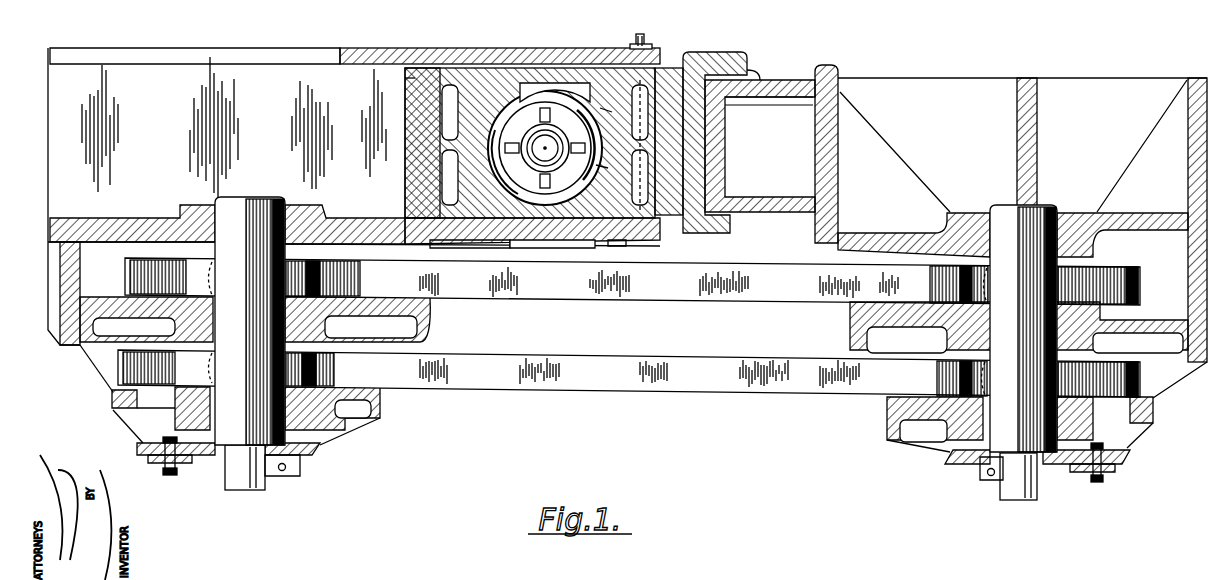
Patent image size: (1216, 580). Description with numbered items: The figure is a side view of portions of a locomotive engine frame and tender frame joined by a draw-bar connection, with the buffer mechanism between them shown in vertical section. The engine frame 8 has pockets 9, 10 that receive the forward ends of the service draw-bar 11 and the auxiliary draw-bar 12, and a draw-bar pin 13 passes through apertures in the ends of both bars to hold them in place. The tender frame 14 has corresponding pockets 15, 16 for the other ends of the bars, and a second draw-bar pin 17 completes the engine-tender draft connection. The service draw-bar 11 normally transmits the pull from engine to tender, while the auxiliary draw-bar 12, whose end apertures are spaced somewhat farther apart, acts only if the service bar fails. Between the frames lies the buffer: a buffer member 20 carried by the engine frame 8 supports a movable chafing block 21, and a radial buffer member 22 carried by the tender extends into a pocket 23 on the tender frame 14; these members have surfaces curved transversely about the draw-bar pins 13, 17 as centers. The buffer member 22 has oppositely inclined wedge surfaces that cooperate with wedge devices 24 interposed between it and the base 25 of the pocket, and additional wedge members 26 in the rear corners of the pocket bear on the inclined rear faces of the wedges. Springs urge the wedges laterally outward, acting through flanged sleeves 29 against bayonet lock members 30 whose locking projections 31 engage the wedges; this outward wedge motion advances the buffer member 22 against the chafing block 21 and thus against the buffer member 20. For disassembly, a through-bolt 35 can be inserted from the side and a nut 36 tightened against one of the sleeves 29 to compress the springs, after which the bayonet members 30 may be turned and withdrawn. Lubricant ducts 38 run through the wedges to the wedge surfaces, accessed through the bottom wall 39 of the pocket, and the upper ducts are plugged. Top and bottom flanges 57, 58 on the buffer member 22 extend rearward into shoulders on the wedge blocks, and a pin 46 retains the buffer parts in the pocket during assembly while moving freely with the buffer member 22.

The engine frame 8 is at (985, 88).
The pocket 9 is at (1144, 291).
The pocket 10 is at (1164, 370).
The service draw-bar 11 is at (672, 292).
The auxiliary draw-bar 12 is at (714, 378).
The draw-bar pin 13 is at (1045, 226).
The tender frame 14 is at (226, 78).
The pocket 15 is at (102, 275).
The pocket 16 is at (102, 367).
The draw-bar pin 17 is at (247, 218).
The buffer member 20 is at (790, 82).
The chafing block 21 is at (700, 54).
The buffer member 22 is at (666, 66).
The pocket 23 is at (528, 68).
The wedge devices 24 is at (492, 77).
The base 25 is at (441, 103).
The wedge members 26 is at (446, 85).
The sleeves 29 is at (512, 153).
The bayonet lock members 30 is at (556, 103).
The locking projections 31 is at (586, 95).
The through-bolt 35 is at (546, 146).
The nut 36 is at (596, 165).
The lubricant ducts 38 is at (406, 78).
The bottom wall 39 is at (486, 246).
The pin 46 is at (641, 34).
The top flange 57 is at (600, 108).
The bottom flange 58 is at (600, 247).